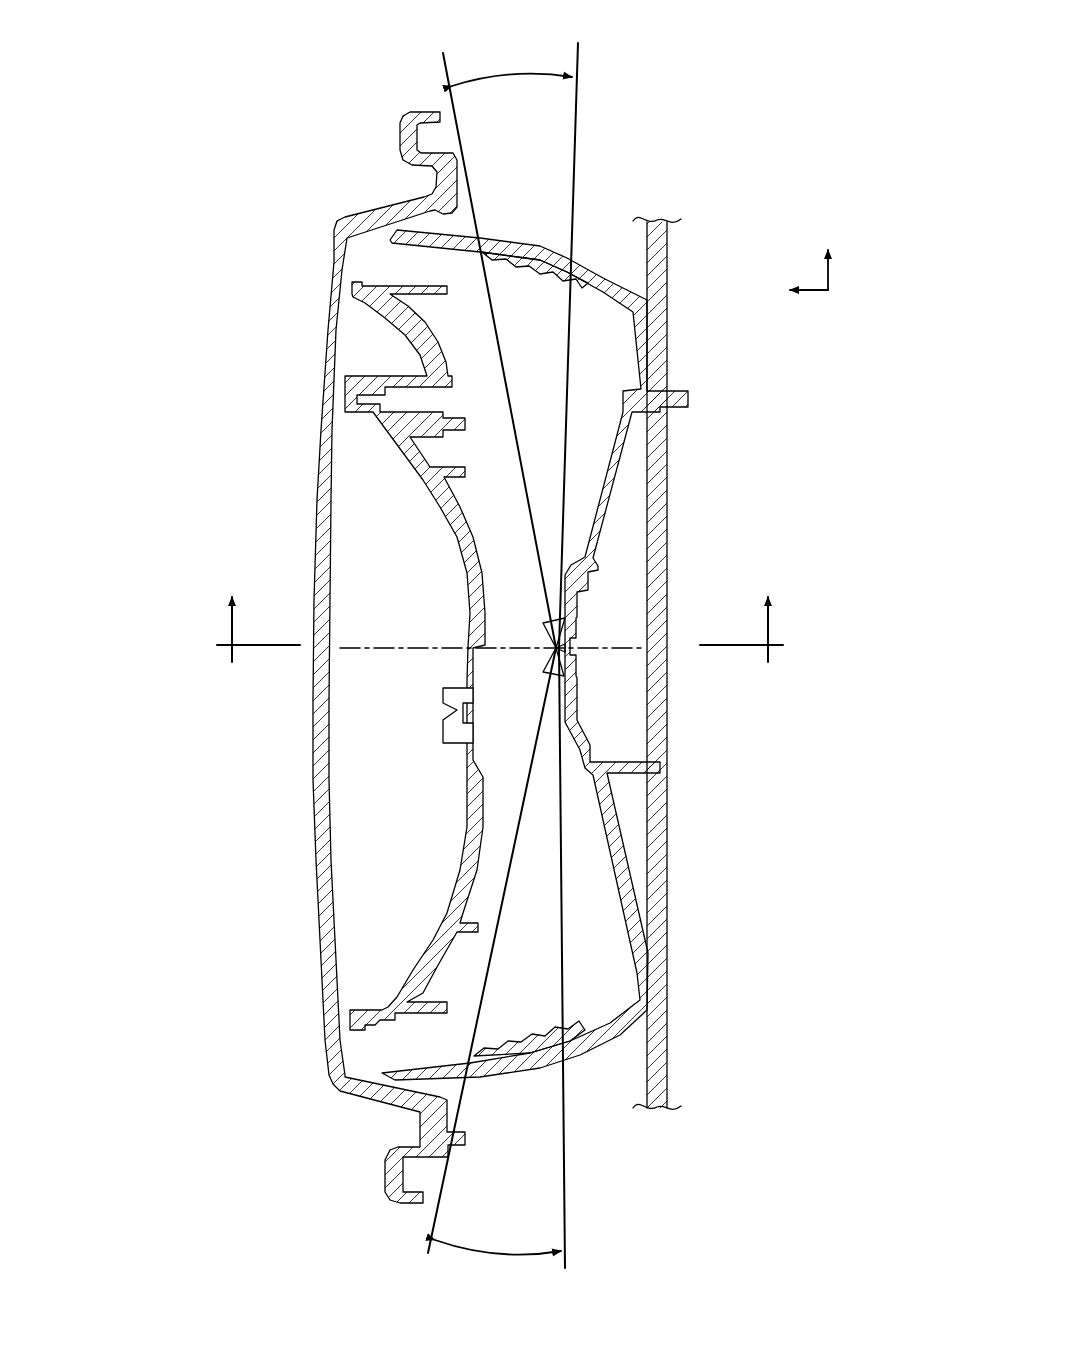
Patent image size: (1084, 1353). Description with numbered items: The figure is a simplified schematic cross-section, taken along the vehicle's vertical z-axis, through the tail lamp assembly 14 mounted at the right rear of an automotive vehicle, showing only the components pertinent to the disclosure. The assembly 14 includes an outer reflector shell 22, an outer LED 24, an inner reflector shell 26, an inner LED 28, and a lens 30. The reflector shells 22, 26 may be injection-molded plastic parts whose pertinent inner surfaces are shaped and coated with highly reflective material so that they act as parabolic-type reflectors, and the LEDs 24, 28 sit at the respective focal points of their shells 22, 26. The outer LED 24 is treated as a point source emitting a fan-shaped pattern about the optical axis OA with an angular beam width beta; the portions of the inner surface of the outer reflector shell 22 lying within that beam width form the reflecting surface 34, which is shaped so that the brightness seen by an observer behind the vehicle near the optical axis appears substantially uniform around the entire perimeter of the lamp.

The tail lamp assembly 14 is at (282, 200).
The outer reflector shell 22 is at (622, 880).
The outer LED 24 is at (575, 668).
The inner reflector shell 26 is at (397, 985).
The inner LED 28 is at (445, 708).
The lens 30 is at (315, 800).
The reflecting surface 34 is at (566, 284).